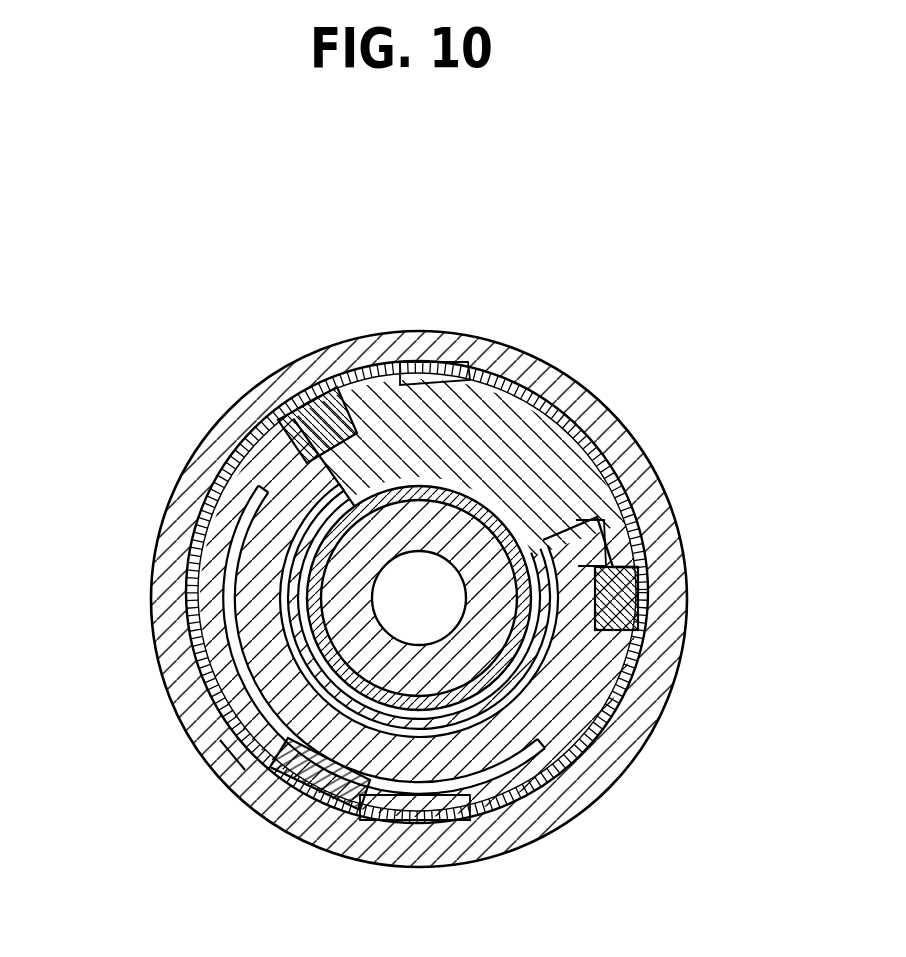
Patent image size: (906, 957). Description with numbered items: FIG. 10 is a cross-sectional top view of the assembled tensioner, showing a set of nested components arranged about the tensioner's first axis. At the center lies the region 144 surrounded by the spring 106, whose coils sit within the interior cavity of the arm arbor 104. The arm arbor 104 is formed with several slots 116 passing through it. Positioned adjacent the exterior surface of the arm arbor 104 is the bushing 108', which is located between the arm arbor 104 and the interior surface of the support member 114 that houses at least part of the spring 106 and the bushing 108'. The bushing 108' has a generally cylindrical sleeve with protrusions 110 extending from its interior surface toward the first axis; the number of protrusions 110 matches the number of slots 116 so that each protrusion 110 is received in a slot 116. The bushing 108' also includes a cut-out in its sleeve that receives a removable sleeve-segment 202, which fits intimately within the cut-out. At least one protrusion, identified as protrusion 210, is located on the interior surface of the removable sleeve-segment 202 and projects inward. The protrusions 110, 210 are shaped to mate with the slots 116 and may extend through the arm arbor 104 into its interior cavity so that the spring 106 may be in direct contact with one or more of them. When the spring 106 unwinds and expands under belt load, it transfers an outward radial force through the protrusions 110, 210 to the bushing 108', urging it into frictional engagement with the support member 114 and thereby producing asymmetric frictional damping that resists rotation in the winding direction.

The arm arbor 104 is at (200, 608).
The spring 106 is at (270, 688).
The bushing 108' is at (458, 420).
The protrusions 110 is at (295, 400).
The support member 114 is at (163, 556).
The slots 116 is at (366, 398).
The core 144 is at (462, 527).
The removable sleeve-segment 202 is at (230, 747).
The protrusion 210 is at (300, 782).